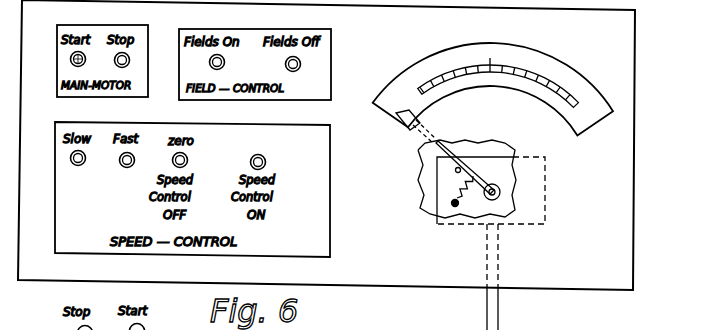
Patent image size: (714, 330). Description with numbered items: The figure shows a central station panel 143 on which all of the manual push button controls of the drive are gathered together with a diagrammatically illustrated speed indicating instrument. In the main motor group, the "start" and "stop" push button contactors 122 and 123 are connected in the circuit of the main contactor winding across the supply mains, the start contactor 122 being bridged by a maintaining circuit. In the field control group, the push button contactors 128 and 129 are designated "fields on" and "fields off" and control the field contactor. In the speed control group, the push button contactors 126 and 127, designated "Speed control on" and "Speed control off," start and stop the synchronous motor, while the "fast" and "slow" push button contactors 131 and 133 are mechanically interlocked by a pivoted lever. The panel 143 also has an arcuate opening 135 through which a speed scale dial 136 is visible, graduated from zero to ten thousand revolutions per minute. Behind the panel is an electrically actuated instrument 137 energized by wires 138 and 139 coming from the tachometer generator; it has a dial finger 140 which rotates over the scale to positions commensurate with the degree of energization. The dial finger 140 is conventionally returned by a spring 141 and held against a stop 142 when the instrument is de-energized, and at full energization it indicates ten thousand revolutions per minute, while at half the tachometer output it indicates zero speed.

The start push button contactor 122 is at (70, 60).
The stop push button contactor 123 is at (130, 58).
The speed control on push button contactor 126 is at (266, 160).
The speed control off push button contactor 127 is at (188, 160).
The fields on push button contactor 128 is at (209, 62).
The fields off push button contactor 129 is at (301, 64).
The fast push button contactor 131 is at (122, 172).
The slow push button contactor 133 is at (74, 171).
The arcuate opening 135 is at (549, 56).
The speed scale dial 136 is at (526, 78).
The electrically actuated instrument 137 is at (437, 168).
The wire 138 is at (486, 306).
The wire 139 is at (500, 306).
The dial finger 140 is at (397, 116).
The spring 141 is at (484, 198).
The stop 142 is at (457, 187).
The central station panel 143 is at (633, 228).